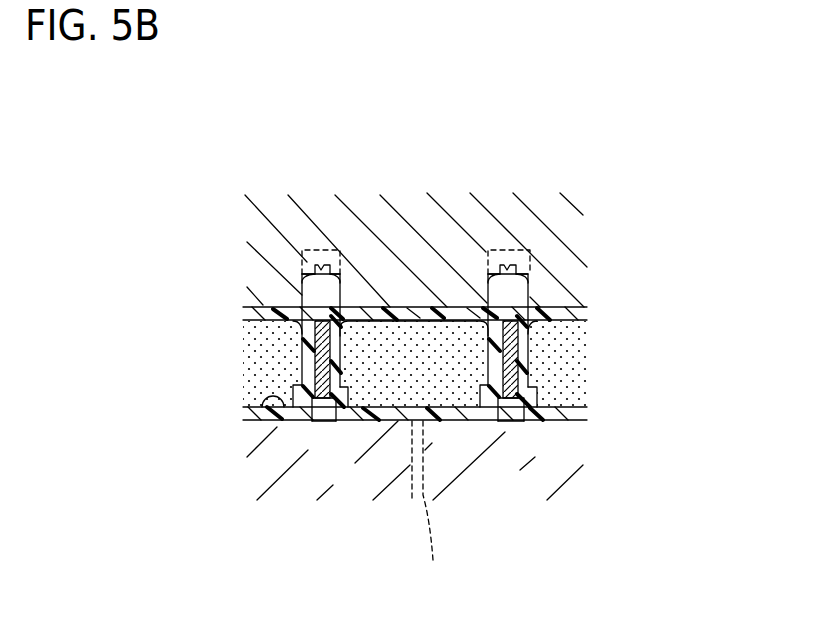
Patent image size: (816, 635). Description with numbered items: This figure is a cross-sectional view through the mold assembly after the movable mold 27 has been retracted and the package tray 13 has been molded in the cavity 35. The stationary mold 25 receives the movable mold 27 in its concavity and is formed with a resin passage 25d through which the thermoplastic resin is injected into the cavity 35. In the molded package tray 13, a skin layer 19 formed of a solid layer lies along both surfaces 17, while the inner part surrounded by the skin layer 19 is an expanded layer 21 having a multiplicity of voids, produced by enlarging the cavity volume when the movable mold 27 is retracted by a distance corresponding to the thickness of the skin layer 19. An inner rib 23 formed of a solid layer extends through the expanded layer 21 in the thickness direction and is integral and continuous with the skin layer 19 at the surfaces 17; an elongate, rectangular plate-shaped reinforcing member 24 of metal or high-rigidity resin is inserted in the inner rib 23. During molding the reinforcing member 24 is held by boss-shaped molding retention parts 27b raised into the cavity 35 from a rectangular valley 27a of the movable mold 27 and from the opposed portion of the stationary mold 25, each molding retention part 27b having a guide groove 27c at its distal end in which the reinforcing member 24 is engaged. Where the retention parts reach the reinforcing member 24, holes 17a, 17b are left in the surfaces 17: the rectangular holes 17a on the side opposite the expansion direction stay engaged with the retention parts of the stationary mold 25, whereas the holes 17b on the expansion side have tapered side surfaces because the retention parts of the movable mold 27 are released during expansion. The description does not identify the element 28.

The package tray 13 is at (550, 307).
The surfaces 17 is at (425, 307).
The holes 17a is at (327, 413).
The holes 17b is at (302, 298).
The skin layer 19 is at (382, 307).
The expanded layer 21 is at (266, 369).
The inner ribs 23 is at (302, 360).
The reinforcing members 24 is at (307, 370).
The stationary mold 25 is at (552, 470).
The resin passage 25d is at (438, 511).
The movable mold 27 is at (568, 205).
The rectangular valleys 27a is at (331, 273).
The molding retention parts 27b is at (302, 297).
The guide groove 27c is at (322, 265).
The bonding portion 28 is at (471, 307).
The cavity 35 is at (280, 421).